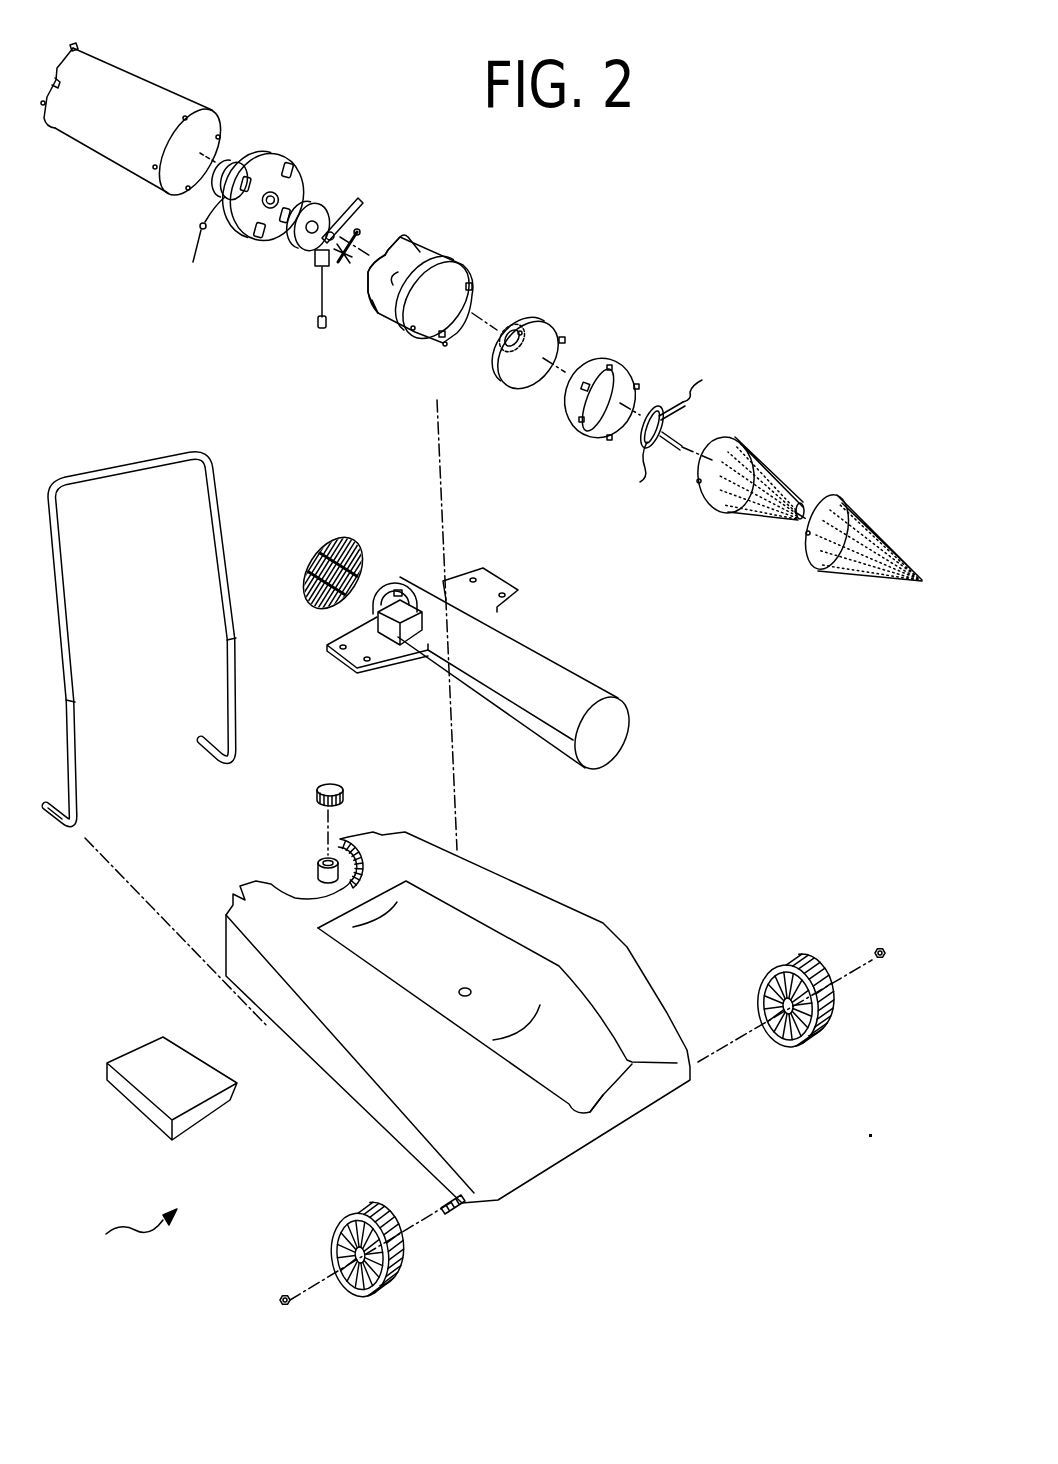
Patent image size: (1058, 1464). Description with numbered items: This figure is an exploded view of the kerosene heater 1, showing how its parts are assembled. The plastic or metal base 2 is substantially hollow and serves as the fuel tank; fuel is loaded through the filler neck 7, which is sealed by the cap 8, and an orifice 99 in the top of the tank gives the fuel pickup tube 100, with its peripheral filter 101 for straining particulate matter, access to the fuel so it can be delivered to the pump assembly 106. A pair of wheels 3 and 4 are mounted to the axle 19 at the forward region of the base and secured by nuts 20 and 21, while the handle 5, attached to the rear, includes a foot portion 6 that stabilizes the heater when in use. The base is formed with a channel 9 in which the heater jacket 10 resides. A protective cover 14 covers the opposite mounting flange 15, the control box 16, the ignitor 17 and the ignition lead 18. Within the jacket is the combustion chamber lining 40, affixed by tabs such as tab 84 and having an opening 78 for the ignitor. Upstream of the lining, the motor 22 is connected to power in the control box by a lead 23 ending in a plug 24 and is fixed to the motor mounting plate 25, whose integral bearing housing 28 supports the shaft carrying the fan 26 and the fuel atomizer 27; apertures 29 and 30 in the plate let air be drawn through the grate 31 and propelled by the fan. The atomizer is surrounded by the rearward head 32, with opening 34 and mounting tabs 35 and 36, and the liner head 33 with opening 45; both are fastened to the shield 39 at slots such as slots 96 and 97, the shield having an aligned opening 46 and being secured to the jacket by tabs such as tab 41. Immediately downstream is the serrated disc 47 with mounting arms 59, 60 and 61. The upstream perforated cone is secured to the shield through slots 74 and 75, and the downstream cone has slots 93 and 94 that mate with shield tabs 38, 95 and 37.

The kerosene heater 1 is at (133, 1230).
The base 2 is at (587, 937).
The wheel 3 is at (398, 1282).
The wheel 4 is at (797, 962).
The handle 5 is at (145, 456).
The foot portion 6 is at (52, 830).
The filler neck 7 is at (318, 873).
The cap 8 is at (340, 792).
The channel 9 is at (594, 1102).
The heater jacket 10 is at (545, 672).
The protective cover 14 is at (202, 1113).
The mounting flange 15 is at (385, 656).
The control box 16 is at (416, 628).
The ignitor 17 is at (400, 590).
The ignition lead 18 is at (380, 590).
The axle 19 is at (458, 1212).
The nut 20 is at (290, 1306).
The nut 21 is at (882, 962).
The motor 22 is at (238, 165).
The lead 23 is at (225, 197).
The plug 24 is at (195, 258).
The motor mounting plate 25 is at (270, 158).
The fan 26 is at (366, 198).
The fuel atomizer 27 is at (352, 236).
The bearing housing 28 is at (320, 215).
The aperture 29 is at (290, 170).
The aperture 30 is at (262, 237).
The grate 31 is at (333, 540).
The rearward head 32 is at (521, 330).
The liner head 33 is at (608, 365).
The opening 34 is at (511, 330).
The mounting tab 35 is at (536, 318).
The mounting tab 36 is at (529, 393).
The tab 37 is at (446, 336).
The tab 38 is at (445, 346).
The shield 39 is at (433, 253).
The combustion chamber lining 40 is at (145, 88).
The tab 41 is at (406, 238).
The opening 45 is at (586, 382).
The opening 46 is at (378, 262).
The serrated disc 47 is at (654, 405).
The mounting arm 59 is at (645, 470).
The mounting arm 60 is at (676, 432).
The mounting arm 61 is at (696, 396).
The slot 74 is at (698, 484).
The slot 75 is at (737, 437).
The opening 78 is at (55, 80).
The tab 84 is at (77, 46).
The slot 93 is at (806, 534).
The slot 94 is at (838, 494).
The tab 95 is at (413, 330).
The slot 96 is at (376, 304).
The slot 97 is at (410, 271).
The orifice 99 is at (468, 988).
The fuel pickup tube 100 is at (318, 296).
The peripheral filter 101 is at (318, 322).
The pump assembly 106 is at (332, 232).